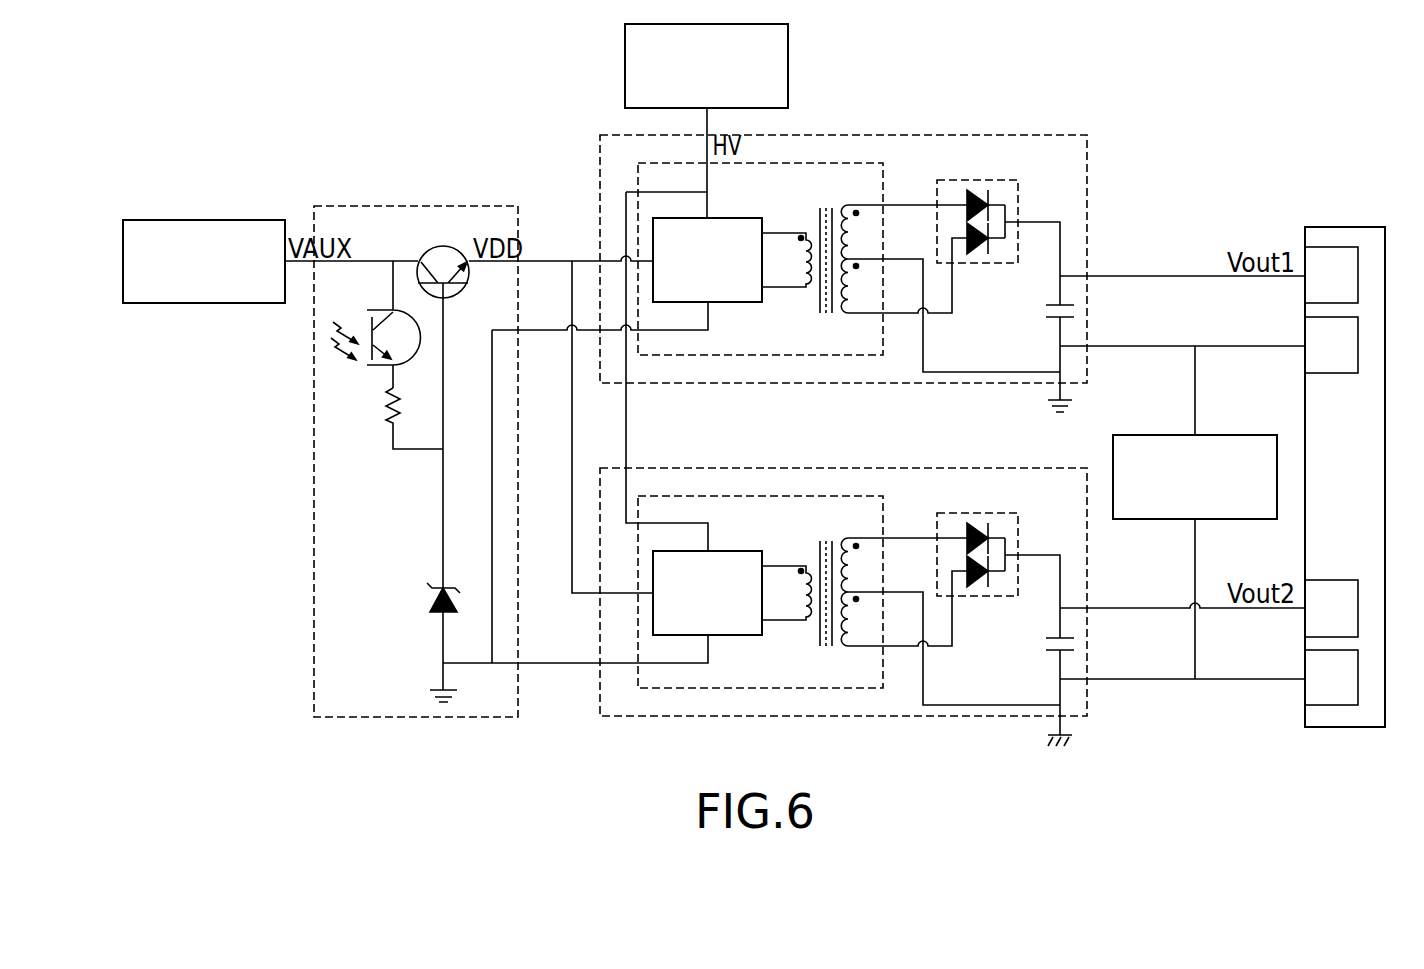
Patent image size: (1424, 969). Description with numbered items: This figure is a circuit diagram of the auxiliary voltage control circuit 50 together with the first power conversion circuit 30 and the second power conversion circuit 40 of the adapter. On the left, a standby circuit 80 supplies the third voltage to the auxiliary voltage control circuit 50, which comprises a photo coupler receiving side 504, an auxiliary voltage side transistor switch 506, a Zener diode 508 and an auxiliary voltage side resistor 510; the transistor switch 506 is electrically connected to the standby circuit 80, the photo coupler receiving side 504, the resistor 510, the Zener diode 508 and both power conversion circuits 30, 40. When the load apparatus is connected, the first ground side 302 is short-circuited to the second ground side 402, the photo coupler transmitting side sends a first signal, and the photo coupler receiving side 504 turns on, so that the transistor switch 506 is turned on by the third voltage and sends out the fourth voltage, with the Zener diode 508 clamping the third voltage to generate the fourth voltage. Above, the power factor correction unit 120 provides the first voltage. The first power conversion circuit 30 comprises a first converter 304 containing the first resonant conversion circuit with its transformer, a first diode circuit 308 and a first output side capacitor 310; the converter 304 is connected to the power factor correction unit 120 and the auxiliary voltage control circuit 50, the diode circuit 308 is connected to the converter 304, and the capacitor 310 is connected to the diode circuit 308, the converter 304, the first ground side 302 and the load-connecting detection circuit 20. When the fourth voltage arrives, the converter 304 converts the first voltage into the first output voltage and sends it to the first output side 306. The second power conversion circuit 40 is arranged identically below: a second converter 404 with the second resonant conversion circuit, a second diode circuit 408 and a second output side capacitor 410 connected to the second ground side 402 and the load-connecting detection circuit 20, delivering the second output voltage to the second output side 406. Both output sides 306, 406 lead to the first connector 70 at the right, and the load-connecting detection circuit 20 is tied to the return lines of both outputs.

The load-connecting detection circuit 20 is at (1207, 444).
The first power conversion circuit 30 is at (870, 142).
The second power conversion circuit 40 is at (870, 475).
The auxiliary voltage control circuit 50 is at (420, 207).
The first connector 70 is at (1345, 233).
The standby circuit 80 is at (205, 226).
The power factor correction unit 120 is at (710, 26).
The first ground side 302 is at (1055, 390).
The first converter 304 is at (762, 172).
The first output side 306 is at (1098, 276).
The first diode circuit 308 is at (980, 185).
The first output side capacitor 310 is at (1040, 313).
The second ground side 402 is at (1055, 723).
The second converter 404 is at (762, 505).
The second output side 406 is at (1098, 607).
The second diode circuit 408 is at (980, 518).
The second output side capacitor 410 is at (1040, 646).
The photo coupler receiving side 504 is at (376, 324).
The auxiliary voltage side transistor switch 506 is at (443, 453).
The Zener diode 508 is at (426, 599).
The auxiliary voltage side resistor 510 is at (415, 418).